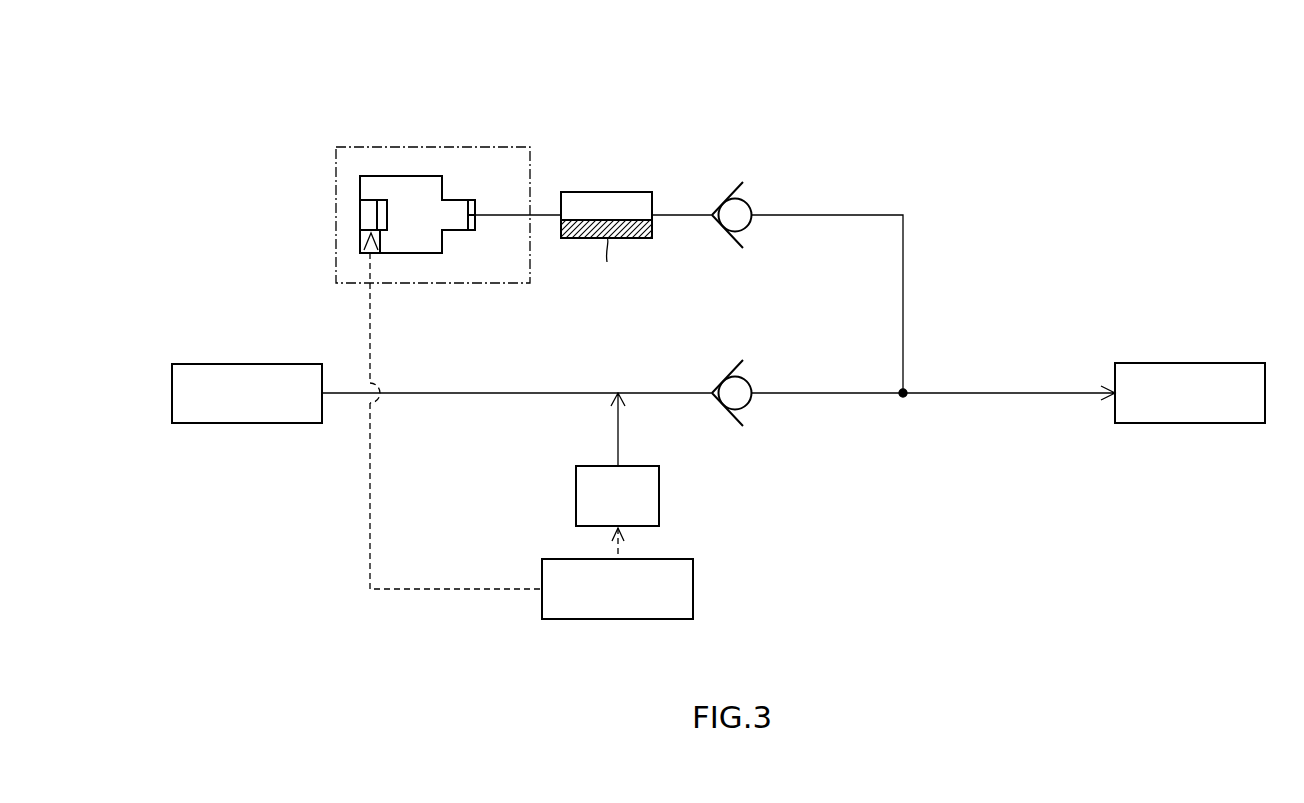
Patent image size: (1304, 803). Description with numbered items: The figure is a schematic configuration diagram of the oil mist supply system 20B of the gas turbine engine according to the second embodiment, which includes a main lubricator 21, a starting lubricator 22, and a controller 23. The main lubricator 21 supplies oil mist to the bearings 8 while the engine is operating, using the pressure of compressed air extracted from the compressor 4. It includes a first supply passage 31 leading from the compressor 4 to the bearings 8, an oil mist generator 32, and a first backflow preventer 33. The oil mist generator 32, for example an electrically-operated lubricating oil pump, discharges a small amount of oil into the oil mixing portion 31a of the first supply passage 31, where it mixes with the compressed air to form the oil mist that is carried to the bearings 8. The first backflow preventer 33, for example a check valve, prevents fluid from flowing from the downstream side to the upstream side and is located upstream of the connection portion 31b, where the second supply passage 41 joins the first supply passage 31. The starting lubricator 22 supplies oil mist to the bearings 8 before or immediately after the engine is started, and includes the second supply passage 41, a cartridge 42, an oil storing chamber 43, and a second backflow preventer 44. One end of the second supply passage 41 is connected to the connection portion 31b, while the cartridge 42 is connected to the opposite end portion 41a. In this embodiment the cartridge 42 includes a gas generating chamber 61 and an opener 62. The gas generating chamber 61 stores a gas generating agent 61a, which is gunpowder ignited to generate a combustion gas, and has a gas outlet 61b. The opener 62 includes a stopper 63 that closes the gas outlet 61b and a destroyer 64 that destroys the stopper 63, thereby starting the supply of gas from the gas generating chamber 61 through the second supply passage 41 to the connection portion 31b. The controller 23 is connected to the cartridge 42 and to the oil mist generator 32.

The compressor 4 is at (231, 364).
The bearings 8 is at (1187, 363).
The oil mist supply system 20B is at (1057, 124).
The main lubricator 21 is at (824, 523).
The starting lubricator 22 is at (700, 90).
The controller 23 is at (617, 619).
The first supply passage 31 is at (841, 393).
The oil mixing portion 31a is at (618, 393).
The connection portion 31b is at (903, 397).
The oil mist generator 32 is at (659, 505).
The first backflow preventer 33 is at (748, 378).
The second supply passage 41 is at (840, 216).
The end portion 41a is at (537, 215).
The cartridge 42 is at (398, 147).
The oil storing chamber 43 is at (603, 192).
The second backflow preventer 44 is at (748, 200).
The gas generating chamber 61 is at (372, 200).
The gas generating agent 61a is at (378, 235).
The gas outlet 61b is at (477, 220).
The opener 62 is at (420, 75).
The stopper 63 is at (470, 200).
The destroyer 64 is at (380, 200).